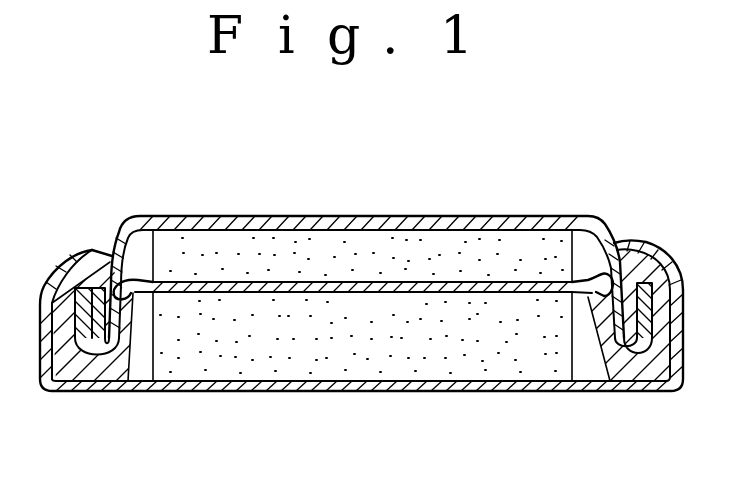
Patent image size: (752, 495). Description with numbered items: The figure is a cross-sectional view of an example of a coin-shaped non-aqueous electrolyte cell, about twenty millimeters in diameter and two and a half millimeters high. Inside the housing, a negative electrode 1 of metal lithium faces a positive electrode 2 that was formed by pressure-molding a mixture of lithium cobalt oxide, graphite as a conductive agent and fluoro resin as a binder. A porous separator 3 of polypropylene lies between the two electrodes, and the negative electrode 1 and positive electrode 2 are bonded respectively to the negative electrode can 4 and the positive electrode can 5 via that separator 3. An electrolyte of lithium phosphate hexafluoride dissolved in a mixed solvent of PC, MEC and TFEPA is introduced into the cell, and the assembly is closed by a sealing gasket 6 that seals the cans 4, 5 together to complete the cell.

The negative electrode 1 is at (232, 238).
The positive electrode 2 is at (248, 365).
The porous separator 3 is at (312, 280).
The negative electrode can 4 is at (473, 216).
The positive electrode can 5 is at (485, 391).
The sealing gasket 6 is at (617, 243).